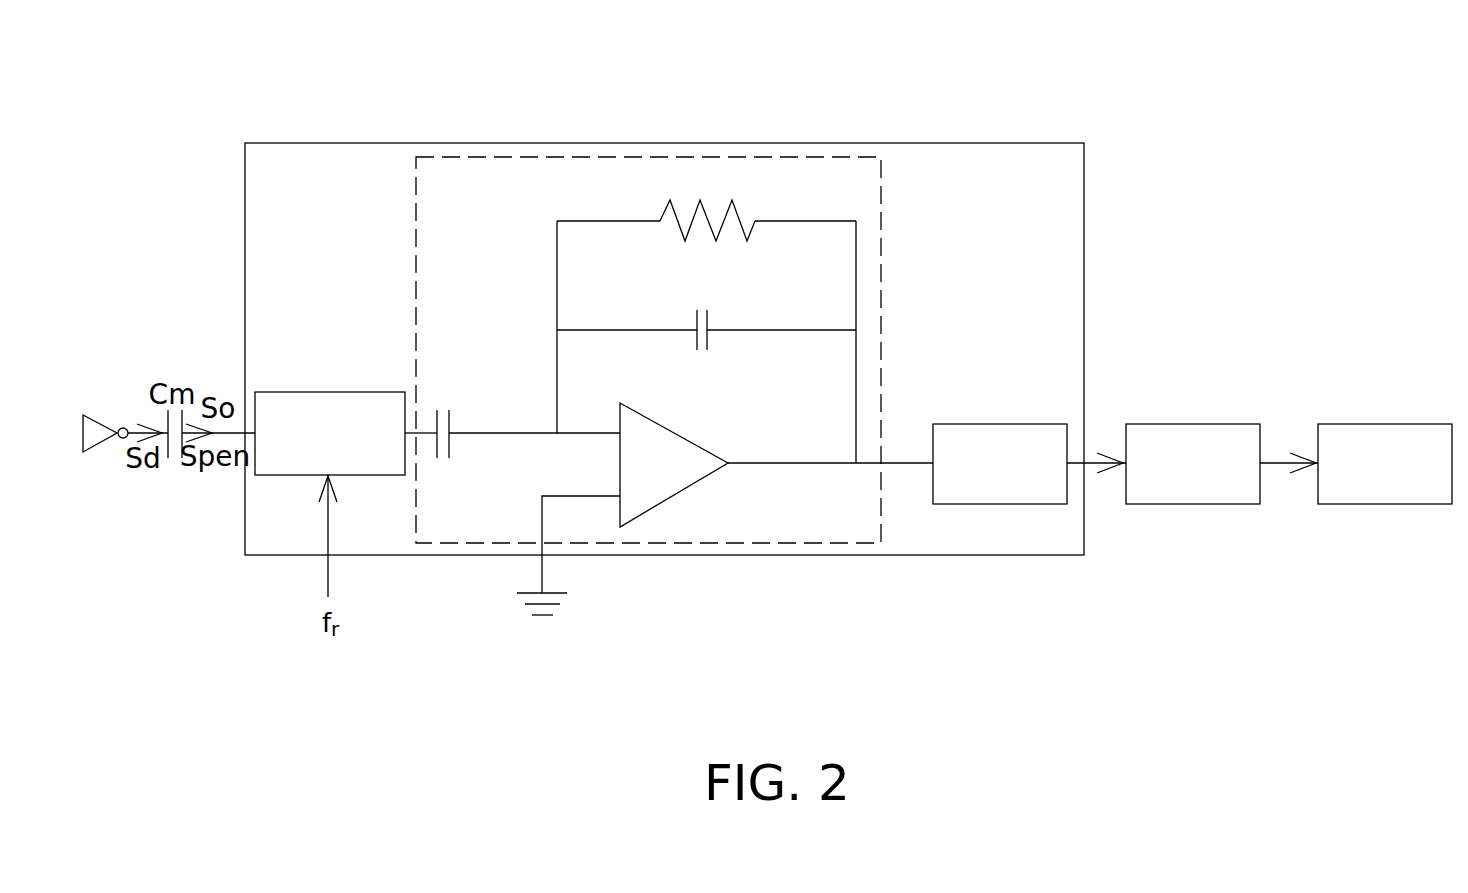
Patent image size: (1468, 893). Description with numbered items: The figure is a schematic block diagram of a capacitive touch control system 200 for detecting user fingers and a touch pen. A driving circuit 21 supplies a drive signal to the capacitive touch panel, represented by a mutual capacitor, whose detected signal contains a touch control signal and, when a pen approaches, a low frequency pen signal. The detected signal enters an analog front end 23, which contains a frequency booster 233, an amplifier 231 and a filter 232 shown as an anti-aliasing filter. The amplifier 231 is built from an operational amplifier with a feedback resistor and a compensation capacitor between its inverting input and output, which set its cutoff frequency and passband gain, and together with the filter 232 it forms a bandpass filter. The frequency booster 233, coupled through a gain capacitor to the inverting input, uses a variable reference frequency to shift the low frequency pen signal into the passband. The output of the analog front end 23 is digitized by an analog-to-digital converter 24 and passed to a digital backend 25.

The capacitive touch control system 200 is at (143, 62).
The driving circuit 21 is at (118, 426).
The analog front end 23 is at (950, 143).
The amplifier 231 is at (720, 543).
The filter 232 is at (982, 504).
The frequency booster 233 is at (290, 475).
The analog-to-digital converter 24 is at (1178, 504).
The digital backend 25 is at (1378, 504).